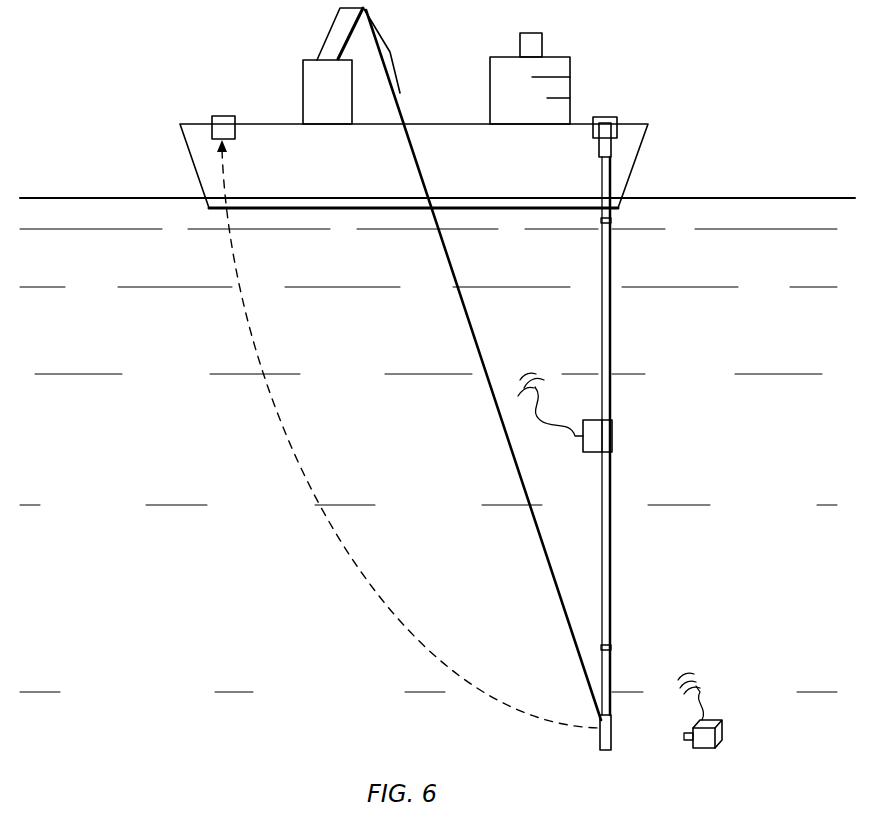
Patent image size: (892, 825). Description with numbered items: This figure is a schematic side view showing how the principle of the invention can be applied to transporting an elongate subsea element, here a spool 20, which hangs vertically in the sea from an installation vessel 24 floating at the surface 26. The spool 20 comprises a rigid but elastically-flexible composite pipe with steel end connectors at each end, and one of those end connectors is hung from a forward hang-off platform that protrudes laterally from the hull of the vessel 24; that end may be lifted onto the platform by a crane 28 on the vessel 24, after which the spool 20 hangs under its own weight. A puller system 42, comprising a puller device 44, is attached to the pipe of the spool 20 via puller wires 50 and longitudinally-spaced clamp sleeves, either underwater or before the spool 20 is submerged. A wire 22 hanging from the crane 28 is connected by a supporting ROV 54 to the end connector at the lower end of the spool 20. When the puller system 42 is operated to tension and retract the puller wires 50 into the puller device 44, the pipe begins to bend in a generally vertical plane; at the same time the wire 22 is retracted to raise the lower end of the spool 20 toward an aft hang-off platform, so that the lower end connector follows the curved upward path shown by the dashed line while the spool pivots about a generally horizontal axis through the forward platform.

The spool 20 is at (648, 305).
The wire 22 is at (478, 338).
The installation vessel 24 is at (441, 123).
The surface 26 is at (62, 197).
The crane 28 is at (303, 62).
The puller system 42 is at (648, 438).
The puller device 44 is at (590, 453).
The puller wires 50 is at (604, 322).
The supporting ROV 54 is at (722, 735).